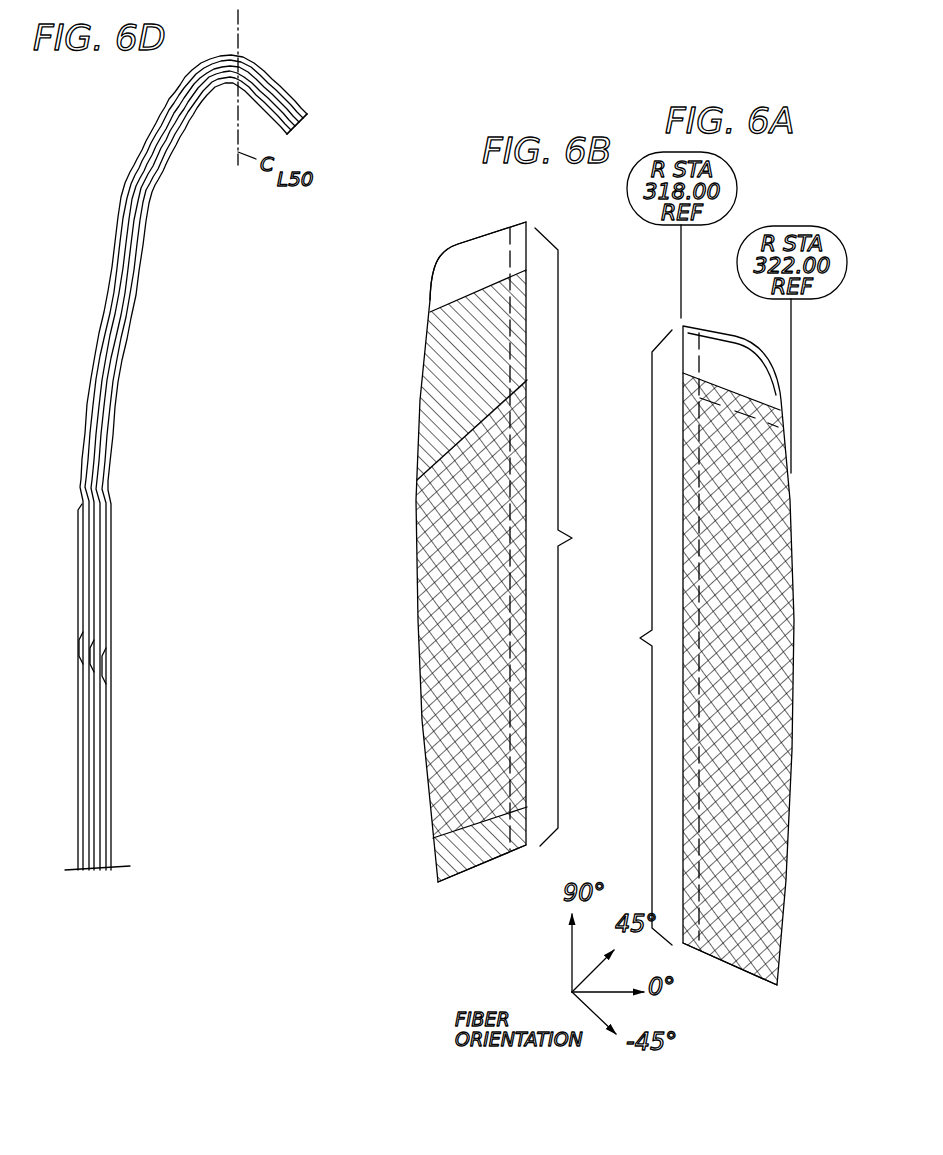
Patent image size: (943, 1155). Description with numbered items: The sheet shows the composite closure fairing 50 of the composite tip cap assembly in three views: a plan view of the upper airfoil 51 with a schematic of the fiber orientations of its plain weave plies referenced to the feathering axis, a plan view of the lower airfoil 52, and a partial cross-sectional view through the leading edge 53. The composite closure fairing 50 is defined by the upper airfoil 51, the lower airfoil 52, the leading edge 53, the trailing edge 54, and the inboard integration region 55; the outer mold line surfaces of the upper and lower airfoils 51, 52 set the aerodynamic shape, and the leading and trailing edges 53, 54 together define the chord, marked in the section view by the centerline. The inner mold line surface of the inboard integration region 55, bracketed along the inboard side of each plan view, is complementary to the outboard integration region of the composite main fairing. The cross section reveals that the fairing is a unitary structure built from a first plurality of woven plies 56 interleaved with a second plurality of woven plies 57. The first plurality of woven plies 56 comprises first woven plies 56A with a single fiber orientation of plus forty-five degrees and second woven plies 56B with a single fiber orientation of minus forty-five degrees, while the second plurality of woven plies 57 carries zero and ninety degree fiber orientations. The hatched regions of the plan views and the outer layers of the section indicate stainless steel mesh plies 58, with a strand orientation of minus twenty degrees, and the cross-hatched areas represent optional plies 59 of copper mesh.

In FIG. 6B, the composite closure fairing 50 is at (407, 700).
In FIG. 6A, the composite closure fairing 50 is at (797, 784).
In FIG. 6D, the upper airfoil 51 is at (299, 91).
In FIG. 6D, the lower airfoil 52 is at (118, 182).
In FIG. 6D, the leading edge 53 is at (247, 53).
In FIG. 6B, the leading edge 53 is at (478, 223).
In FIG. 6A, the leading edge 53 is at (738, 340).
In FIG. 6B, the trailing edge 54 is at (477, 887).
In FIG. 6A, the trailing edge 54 is at (756, 993).
In FIG. 6B, the inboard integration region 55 is at (575, 537).
In FIG. 6A, the inboard integration region 55 is at (639, 637).
In FIG. 6D, the first plurality of woven plies 56 is at (168, 462).
In FIG. 6D, the first woven plies 56A is at (90, 408).
In FIG. 6D, the second woven plies 56B is at (98, 358).
In FIG. 6D, the second plurality of woven plies 57 is at (107, 810).
In FIG. 6D, the stainless steel mesh plies 58 is at (77, 722).
In FIG. 6B, the stainless steel mesh plies 58 is at (452, 348).
In FIG. 6A, the stainless steel mesh plies 58 is at (760, 453).
In FIG. 6B, the copper mesh plies 59 is at (440, 583).
In FIG. 6A, the copper mesh plies 59 is at (765, 683).